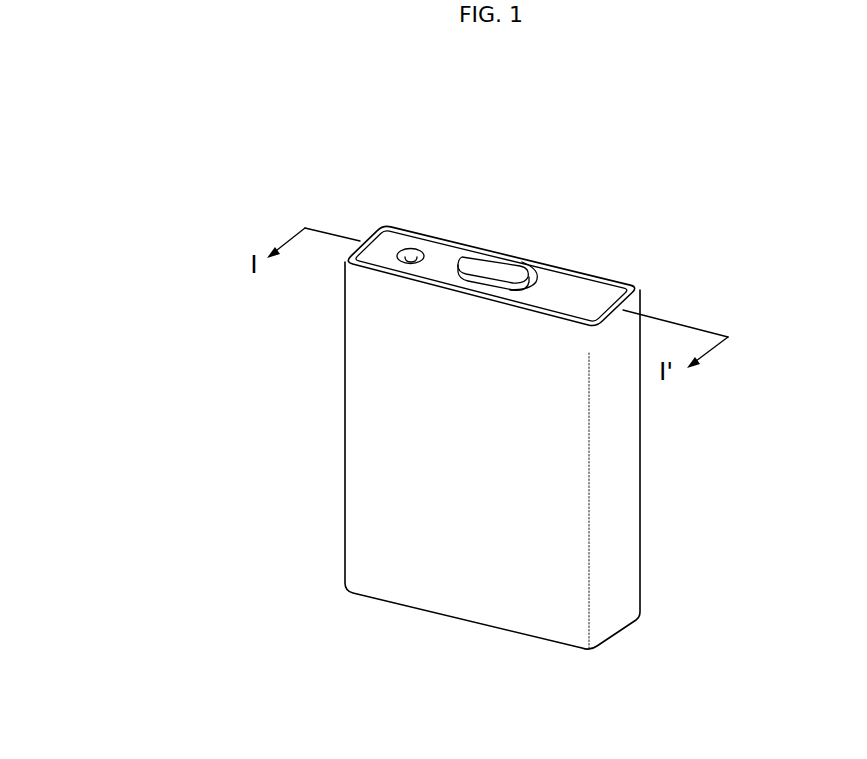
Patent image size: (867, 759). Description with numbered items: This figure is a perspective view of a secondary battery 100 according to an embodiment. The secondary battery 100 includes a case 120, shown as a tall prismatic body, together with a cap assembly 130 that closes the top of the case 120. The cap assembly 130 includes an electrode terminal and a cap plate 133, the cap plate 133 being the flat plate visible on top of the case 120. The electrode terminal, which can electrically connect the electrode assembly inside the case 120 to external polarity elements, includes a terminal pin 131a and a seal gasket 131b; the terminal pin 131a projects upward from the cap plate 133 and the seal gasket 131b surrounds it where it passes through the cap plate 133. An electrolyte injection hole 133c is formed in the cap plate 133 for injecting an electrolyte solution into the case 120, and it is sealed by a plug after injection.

The secondary battery 100 is at (340, 210).
The case 120 is at (628, 488).
The cap assembly 130 is at (609, 247).
The cap plate 133 is at (612, 292).
The electrolyte injection hole 133c is at (412, 249).
The terminal pin 131a is at (475, 258).
The seal gasket 131b is at (538, 281).